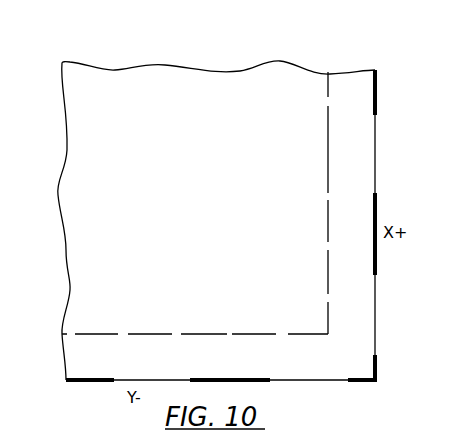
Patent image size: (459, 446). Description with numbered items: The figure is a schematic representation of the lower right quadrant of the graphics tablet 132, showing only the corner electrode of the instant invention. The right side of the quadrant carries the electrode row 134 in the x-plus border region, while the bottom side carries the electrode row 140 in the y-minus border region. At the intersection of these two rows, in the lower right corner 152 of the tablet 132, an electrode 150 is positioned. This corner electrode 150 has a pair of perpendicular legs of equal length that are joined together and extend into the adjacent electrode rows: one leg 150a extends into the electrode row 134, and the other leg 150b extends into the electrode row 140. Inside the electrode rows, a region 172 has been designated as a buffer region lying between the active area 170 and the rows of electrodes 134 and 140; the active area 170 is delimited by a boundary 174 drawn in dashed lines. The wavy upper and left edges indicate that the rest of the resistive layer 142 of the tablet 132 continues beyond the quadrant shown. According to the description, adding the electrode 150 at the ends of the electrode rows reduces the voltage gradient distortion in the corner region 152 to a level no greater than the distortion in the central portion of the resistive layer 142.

The graphics tablet 132 is at (299, 24).
The electrode row 134 is at (375, 66).
The electrode row 140 is at (277, 375).
The resistive layer 142 is at (162, 75).
The electrode 150 is at (378, 379).
The leg 150a is at (378, 357).
The leg 150b is at (362, 383).
The lower right corner 152 is at (380, 387).
The active area 170 is at (212, 257).
The buffer region 172 is at (198, 369).
The boundary 174 is at (97, 334).